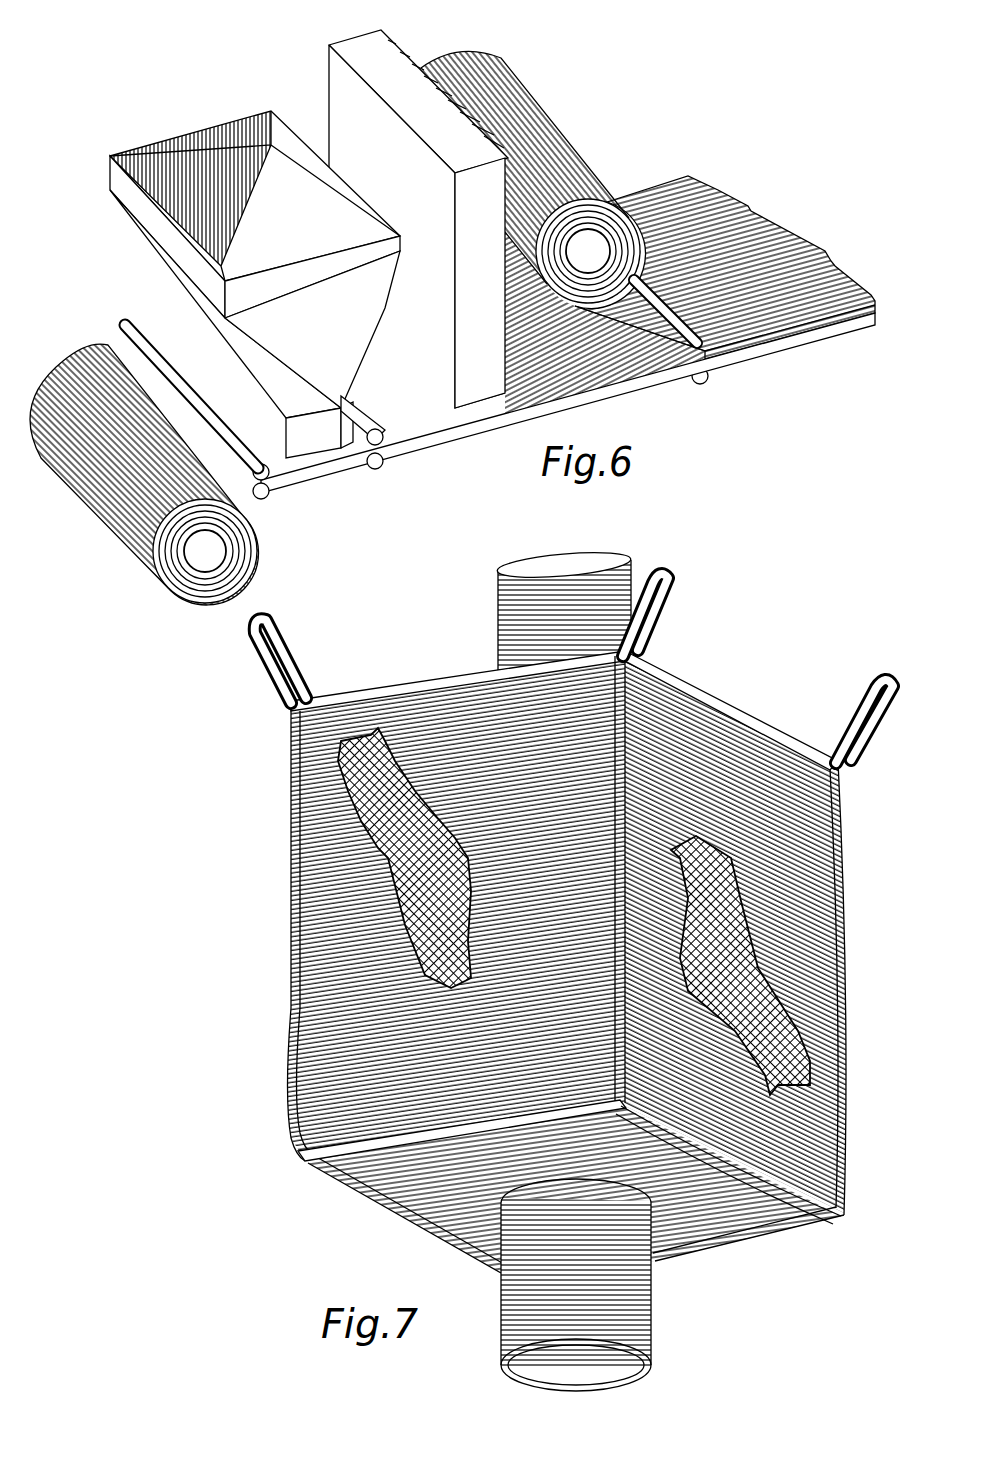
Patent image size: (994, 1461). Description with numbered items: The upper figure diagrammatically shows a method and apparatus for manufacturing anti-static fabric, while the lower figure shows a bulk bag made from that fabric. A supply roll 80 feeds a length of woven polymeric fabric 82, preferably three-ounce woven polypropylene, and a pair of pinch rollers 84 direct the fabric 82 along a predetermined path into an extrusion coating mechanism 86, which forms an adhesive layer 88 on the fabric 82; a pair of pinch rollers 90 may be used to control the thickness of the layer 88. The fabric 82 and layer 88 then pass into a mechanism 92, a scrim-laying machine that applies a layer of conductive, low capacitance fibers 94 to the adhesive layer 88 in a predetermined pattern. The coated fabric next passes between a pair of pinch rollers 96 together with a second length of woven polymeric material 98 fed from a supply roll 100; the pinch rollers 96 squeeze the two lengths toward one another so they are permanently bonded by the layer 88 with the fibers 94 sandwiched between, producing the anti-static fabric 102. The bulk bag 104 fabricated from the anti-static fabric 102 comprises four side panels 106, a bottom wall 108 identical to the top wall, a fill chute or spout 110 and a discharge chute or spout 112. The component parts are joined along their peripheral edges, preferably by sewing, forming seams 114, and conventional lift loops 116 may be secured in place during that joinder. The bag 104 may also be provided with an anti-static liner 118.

In FIG. 6, the supply roll 80 is at (238, 565).
In FIG. 6, the length of woven polymeric fabric 82 is at (52, 356).
In FIG. 6, the pinch rollers 84 is at (121, 306).
In FIG. 6, the extrusion coating mechanism 86 is at (195, 110).
In FIG. 6, the layer 88 is at (413, 400).
In FIG. 6, the pinch rollers 90 is at (373, 458).
In FIG. 6, the mechanism 92 is at (333, 87).
In FIG. 6, the layer of conductive, low capacitance fibers 94 is at (597, 383).
In FIG. 6, the pinch rollers 96 is at (695, 362).
In FIG. 6, the second length of woven polymeric material 98 is at (667, 167).
In FIG. 6, the supply roll 100 is at (523, 97).
In FIG. 6, the anti-static fabric 102 is at (760, 253).
In FIG. 7, the bulk bag 104 is at (320, 1020).
In FIG. 7, the side panels 106 is at (335, 978).
In FIG. 7, the bottom wall 108 is at (445, 1217).
In FIG. 7, the fill chute or spout 110 is at (483, 602).
In FIG. 7, the discharge chute or spout 112 is at (620, 1275).
In FIG. 7, the seams 114 is at (388, 668).
In FIG. 7, the lift loops 116 is at (258, 660).
In FIG. 7, the anti-static liner 118 is at (390, 818).